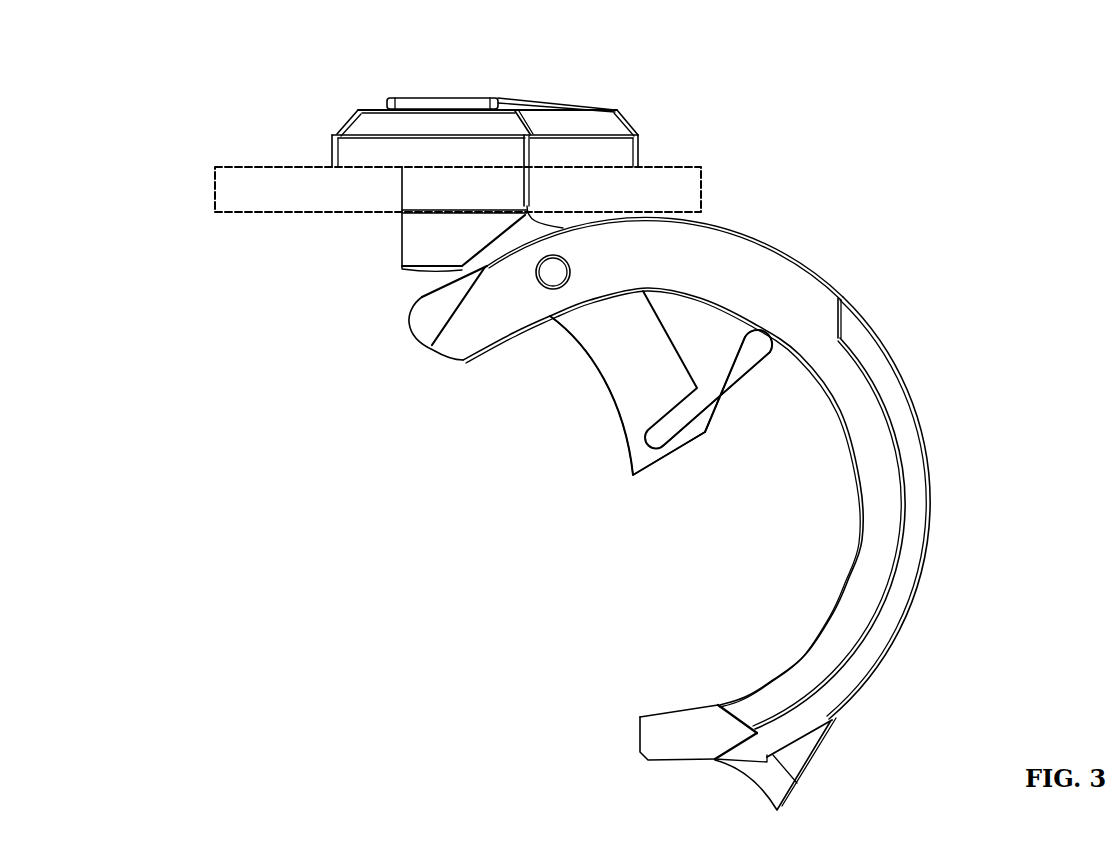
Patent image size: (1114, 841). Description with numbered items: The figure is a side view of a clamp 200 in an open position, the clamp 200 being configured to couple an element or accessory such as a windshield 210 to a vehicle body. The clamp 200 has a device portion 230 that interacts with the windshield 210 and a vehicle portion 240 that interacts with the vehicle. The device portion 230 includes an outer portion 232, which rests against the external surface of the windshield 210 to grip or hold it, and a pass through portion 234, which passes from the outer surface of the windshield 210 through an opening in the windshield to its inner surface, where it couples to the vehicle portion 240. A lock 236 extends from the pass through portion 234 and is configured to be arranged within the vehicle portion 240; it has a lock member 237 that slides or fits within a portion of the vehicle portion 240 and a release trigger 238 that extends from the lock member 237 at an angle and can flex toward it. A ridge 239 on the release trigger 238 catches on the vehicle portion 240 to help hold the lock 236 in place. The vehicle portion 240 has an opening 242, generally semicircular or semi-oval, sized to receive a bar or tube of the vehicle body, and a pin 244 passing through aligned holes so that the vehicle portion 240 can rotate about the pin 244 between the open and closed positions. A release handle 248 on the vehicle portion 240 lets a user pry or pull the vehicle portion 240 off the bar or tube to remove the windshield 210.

The clamp 200 is at (657, 91).
The windshield 210 is at (676, 189).
The device portion 230 is at (567, 94).
The outer portion 232 is at (607, 153).
The pass through portion 234 is at (450, 190).
The lock 236 is at (586, 466).
The lock member 237 is at (632, 370).
The release trigger 238 is at (747, 363).
The ridge 239 is at (706, 458).
The vehicle portion 240 is at (844, 273).
The opening 242 is at (669, 603).
The pin 244 is at (551, 276).
The release handle 248 is at (749, 787).